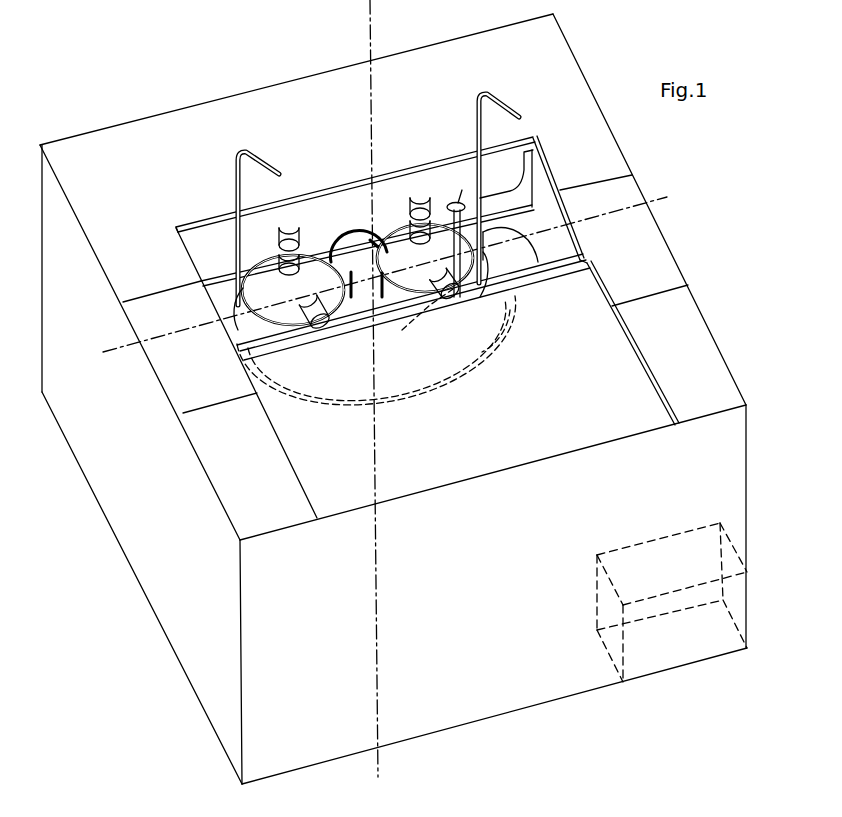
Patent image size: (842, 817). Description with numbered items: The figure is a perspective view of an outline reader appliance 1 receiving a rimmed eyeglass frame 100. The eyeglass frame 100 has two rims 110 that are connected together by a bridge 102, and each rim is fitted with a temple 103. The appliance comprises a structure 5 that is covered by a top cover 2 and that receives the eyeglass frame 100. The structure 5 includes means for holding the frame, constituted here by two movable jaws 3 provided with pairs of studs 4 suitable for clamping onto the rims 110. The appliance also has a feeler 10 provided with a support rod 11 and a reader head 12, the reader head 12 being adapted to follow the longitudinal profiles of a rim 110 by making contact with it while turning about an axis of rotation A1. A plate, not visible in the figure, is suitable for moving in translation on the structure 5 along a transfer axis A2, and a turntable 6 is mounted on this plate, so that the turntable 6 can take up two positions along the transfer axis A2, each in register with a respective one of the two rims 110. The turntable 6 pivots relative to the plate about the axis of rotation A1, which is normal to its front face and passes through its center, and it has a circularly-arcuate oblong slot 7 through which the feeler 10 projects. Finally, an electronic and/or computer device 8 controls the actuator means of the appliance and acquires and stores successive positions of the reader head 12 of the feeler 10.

The outline reader appliance 1 is at (135, 80).
The top cover 2 is at (698, 330).
The movable jaws 3 is at (186, 226).
The studs 4 is at (268, 226).
The structure 5 is at (518, 266).
The turntable 6 is at (226, 328).
The circularly-arcuate oblong slot 7 is at (452, 344).
The electronic and/or computer device 8 is at (710, 650).
The feeler 10 is at (536, 148).
The support rod 11 is at (480, 282).
The reader head 12 is at (476, 206).
The rimmed eyeglass frame 100 is at (271, 170).
The bridge 102 is at (350, 236).
The temple 103 is at (232, 166).
The rims 110 is at (222, 286).
The axis of rotation A1 is at (370, 24).
The transfer axis A2 is at (104, 350).